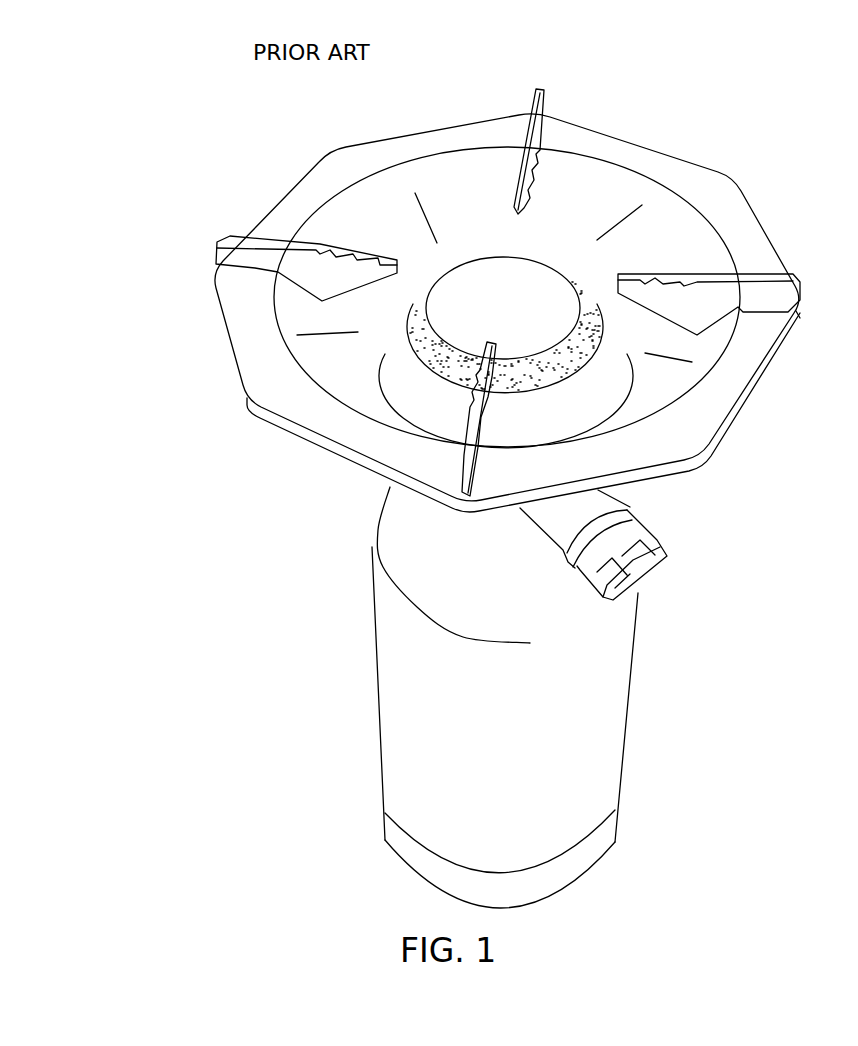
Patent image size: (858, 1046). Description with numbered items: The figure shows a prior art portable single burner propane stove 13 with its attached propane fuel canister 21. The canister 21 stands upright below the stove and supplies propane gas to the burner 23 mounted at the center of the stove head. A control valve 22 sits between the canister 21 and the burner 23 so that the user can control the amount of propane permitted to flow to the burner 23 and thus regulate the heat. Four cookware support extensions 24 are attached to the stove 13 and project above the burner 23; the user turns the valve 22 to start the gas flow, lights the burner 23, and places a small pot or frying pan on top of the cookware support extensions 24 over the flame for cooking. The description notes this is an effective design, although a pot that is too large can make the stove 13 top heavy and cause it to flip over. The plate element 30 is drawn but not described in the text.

The single burner propane stove 13 is at (299, 672).
The propane fuel canister 21 is at (633, 690).
The control valve 22 is at (667, 551).
The burner 23 is at (598, 312).
The cookware support extensions 24 is at (528, 138).
The octagonal wind shield plate 30 is at (307, 188).